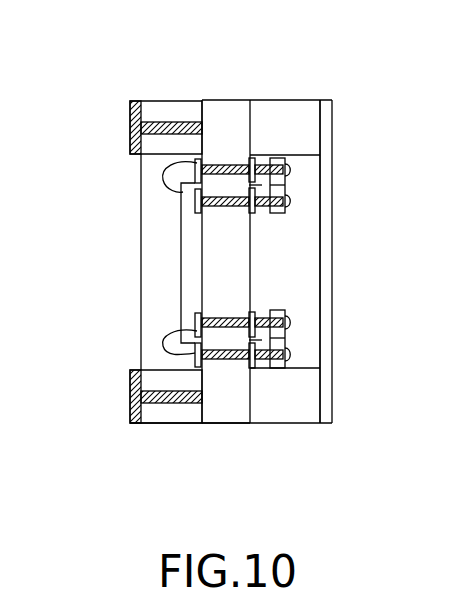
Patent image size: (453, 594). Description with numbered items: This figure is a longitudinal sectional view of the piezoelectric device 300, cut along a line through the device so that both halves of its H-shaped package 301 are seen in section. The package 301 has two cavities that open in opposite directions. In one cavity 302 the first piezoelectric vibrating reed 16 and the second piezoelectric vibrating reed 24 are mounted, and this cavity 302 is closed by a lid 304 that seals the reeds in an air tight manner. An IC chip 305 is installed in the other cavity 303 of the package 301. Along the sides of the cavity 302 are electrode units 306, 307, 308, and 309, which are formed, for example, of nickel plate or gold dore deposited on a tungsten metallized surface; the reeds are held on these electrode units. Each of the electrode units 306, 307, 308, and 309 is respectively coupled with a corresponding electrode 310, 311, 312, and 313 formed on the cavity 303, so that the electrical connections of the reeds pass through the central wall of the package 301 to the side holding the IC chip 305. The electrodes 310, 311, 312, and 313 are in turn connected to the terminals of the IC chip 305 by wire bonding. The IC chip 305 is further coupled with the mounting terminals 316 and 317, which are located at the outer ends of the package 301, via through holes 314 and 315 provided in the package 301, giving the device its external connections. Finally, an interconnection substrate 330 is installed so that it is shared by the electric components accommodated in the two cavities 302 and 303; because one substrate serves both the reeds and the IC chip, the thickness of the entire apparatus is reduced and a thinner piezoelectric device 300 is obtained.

The piezoelectric device 300 is at (392, 43).
The H-shaped package 301 is at (222, 96).
The cavity 302 is at (313, 237).
The cavity 303 is at (152, 236).
The lid 304 is at (328, 424).
The IC chip 305 is at (180, 275).
The electrode unit 306 is at (251, 157).
The electrode unit 307 is at (253, 216).
The electrode unit 308 is at (253, 311).
The electrode unit 309 is at (262, 369).
The electrode 310 is at (194, 164).
The electrode 311 is at (192, 201).
The electrode 312 is at (195, 357).
The electrode 313 is at (195, 318).
The through hole 314 is at (170, 122).
The through hole 315 is at (172, 405).
The mounting terminal 316 is at (130, 123).
The mounting terminal 317 is at (130, 392).
The first piezoelectric vibrating reed 16 is at (285, 184).
The second piezoelectric vibrating reed 24 is at (287, 338).
The interconnection substrate 330 is at (223, 410).